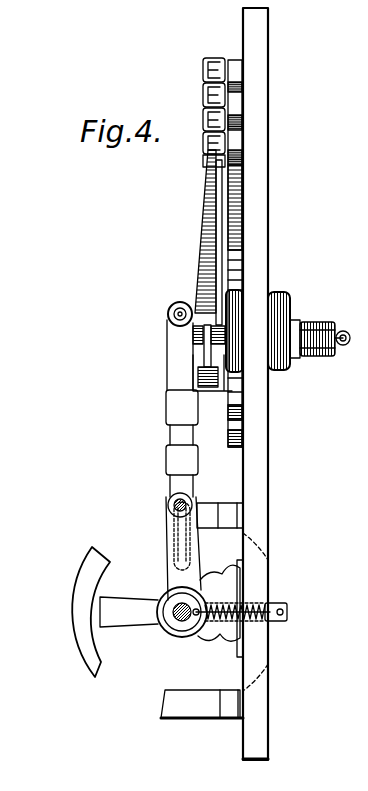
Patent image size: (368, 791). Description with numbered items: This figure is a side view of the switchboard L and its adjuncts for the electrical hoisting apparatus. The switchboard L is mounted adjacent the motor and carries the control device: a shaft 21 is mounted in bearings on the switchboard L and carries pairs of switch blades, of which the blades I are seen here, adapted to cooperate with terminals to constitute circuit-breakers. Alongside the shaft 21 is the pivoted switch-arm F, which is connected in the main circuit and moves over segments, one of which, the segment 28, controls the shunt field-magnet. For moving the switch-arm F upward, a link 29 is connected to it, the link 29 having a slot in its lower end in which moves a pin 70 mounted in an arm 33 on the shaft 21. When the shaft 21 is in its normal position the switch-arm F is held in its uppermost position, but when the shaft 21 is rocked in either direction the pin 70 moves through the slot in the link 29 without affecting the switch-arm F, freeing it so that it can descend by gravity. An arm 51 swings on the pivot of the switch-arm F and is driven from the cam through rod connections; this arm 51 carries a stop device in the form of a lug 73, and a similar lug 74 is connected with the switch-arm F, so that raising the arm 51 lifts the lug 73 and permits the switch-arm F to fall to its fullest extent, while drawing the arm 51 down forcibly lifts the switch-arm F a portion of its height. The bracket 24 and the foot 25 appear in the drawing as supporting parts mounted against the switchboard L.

The switchboard L is at (268, 384).
The segment 28 is at (233, 264).
The switch-arm F is at (210, 240).
The lug 73 is at (310, 318).
The lug 74 is at (293, 358).
The arm 51 is at (345, 330).
The link 29 is at (169, 399).
The pin 70 is at (169, 503).
The bracket 24 is at (220, 567).
The arm 33 is at (170, 548).
The shaft 21 is at (181, 618).
The switch blades I is at (82, 575).
The foot 25 is at (208, 712).